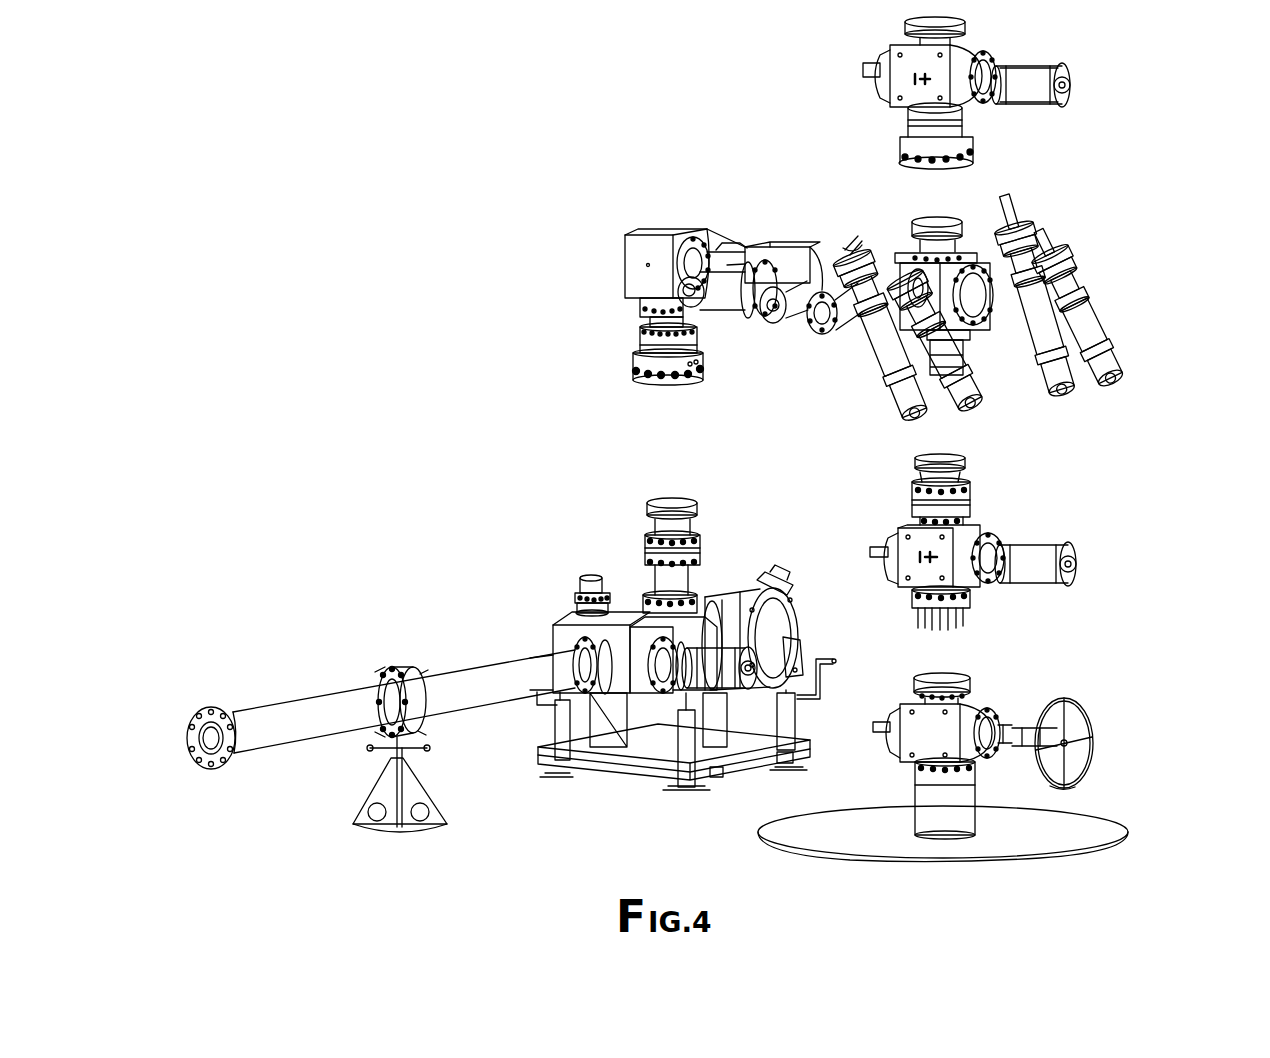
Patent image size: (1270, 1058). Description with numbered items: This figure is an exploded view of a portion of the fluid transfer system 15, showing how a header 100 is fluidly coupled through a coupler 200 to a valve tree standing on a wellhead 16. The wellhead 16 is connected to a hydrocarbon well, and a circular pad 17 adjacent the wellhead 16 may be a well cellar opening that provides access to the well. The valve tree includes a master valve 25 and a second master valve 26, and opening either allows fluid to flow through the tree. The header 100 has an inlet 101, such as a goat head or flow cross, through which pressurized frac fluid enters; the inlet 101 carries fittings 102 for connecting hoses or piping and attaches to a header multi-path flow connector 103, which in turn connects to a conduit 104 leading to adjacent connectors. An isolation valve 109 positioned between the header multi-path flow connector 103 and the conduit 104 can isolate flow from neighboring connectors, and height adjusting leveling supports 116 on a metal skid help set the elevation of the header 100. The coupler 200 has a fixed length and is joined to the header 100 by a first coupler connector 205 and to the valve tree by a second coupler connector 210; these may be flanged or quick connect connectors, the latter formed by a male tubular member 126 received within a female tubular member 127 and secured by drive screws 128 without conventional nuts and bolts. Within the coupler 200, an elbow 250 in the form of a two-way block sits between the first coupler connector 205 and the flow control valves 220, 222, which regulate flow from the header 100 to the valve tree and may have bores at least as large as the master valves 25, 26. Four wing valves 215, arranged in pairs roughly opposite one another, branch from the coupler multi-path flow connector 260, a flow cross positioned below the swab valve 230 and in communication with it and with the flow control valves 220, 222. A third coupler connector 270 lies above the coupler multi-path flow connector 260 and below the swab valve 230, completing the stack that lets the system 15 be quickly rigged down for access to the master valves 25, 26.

The fluid transfer system 15 is at (1139, 278).
The wellhead 16 is at (1093, 780).
The circular pad 17 is at (1127, 840).
The master valve 25 is at (960, 695).
The second master valve 26 is at (985, 530).
The header 100 is at (362, 657).
The inlet 101 is at (803, 614).
The fitting 102 is at (790, 582).
The header multi-path flow connector 103 is at (735, 592).
The conduit 104 is at (455, 718).
The isolation valve 109 is at (560, 615).
The height adjusting leveling support 116 is at (665, 797).
The male tubular member 126 is at (695, 506).
The female tubular member 127 is at (672, 385).
The drive screw 128 is at (720, 372).
The coupler 200 is at (770, 225).
The first coupler connector 205 is at (625, 412).
The second coupler connector 210 is at (960, 447).
The wing valve 215 is at (905, 415).
The flow control valve 220 is at (795, 240).
The flow control valve 222 is at (875, 260).
The swab valve 230 is at (880, 86).
The elbow 250 is at (623, 262).
The coupler multi-path flow connector 260 is at (965, 232).
The third coupler connector 270 is at (965, 177).